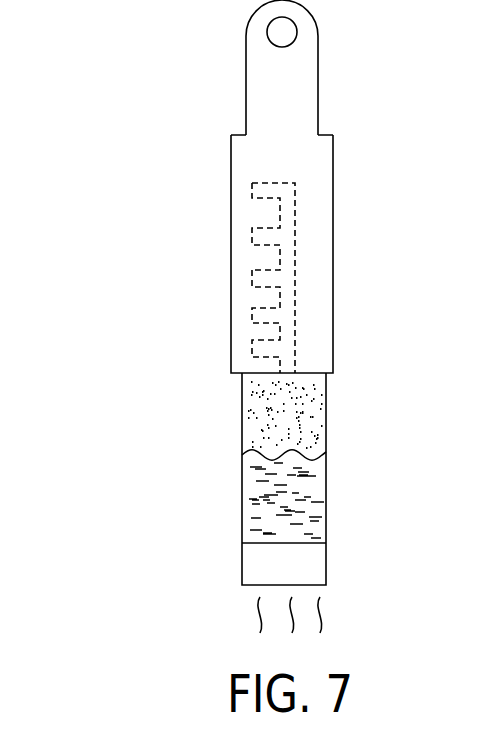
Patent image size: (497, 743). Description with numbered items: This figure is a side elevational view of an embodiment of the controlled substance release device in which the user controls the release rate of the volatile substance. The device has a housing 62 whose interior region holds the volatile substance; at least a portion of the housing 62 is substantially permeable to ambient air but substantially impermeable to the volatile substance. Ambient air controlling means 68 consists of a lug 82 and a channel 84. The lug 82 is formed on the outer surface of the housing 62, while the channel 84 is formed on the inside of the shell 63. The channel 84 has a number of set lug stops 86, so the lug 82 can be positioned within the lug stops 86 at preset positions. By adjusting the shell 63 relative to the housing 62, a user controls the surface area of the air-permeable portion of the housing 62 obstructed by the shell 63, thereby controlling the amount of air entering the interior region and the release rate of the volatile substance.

The ambient air controlling means 68 is at (128, 241).
The lug 82 is at (268, 240).
The channel 84 is at (282, 290).
The lug stops 86 is at (258, 276).
The shell 63 is at (333, 310).
The housing 62 is at (327, 432).